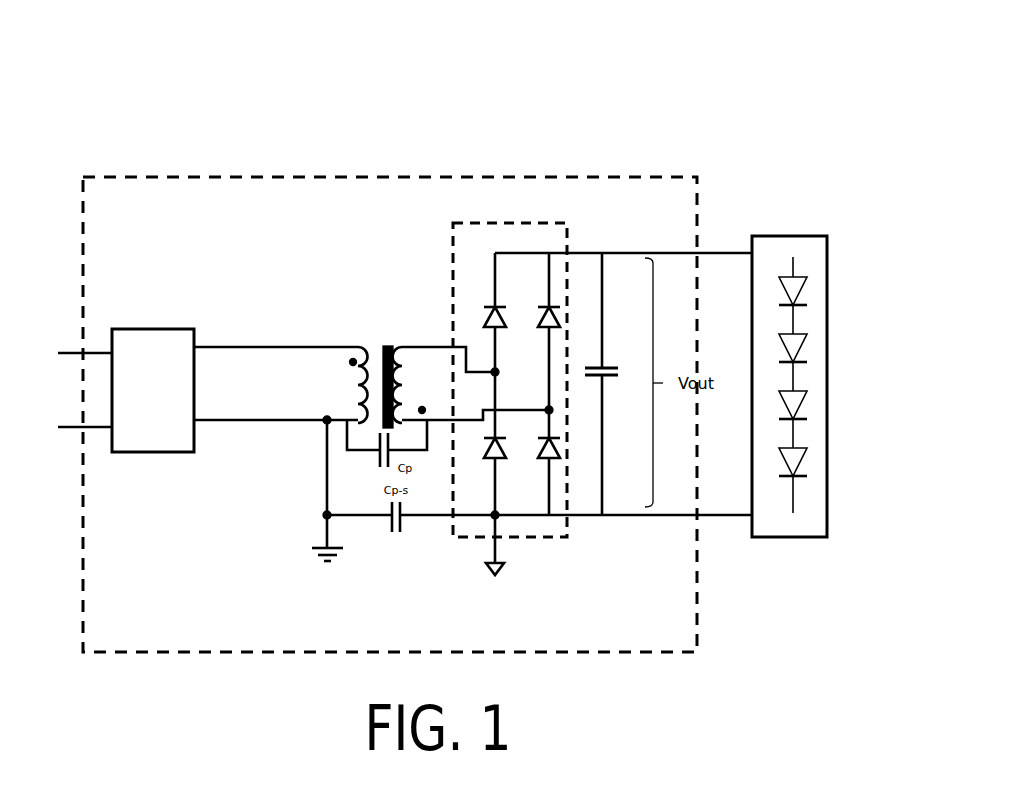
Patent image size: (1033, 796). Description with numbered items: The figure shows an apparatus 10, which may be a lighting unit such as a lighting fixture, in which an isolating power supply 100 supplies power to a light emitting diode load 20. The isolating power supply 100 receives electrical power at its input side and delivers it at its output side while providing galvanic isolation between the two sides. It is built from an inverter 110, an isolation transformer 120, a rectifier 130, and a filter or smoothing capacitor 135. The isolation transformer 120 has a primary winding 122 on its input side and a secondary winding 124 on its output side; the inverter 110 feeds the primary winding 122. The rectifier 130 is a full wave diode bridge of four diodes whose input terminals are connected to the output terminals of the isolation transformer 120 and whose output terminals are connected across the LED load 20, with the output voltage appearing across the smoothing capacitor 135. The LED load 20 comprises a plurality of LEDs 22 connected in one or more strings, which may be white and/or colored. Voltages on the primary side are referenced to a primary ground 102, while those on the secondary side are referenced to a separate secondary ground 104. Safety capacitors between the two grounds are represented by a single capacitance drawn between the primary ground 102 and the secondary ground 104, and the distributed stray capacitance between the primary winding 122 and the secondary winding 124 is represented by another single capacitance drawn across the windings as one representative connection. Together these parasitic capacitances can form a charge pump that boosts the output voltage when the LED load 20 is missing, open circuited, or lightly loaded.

The apparatus 10 is at (760, 36).
The LED load 20 is at (769, 420).
The LEDs 22 is at (779, 287).
The isolating power supply 100 is at (410, 177).
The primary ground 102 is at (306, 557).
The secondary ground 104 is at (475, 546).
The inverter 110 is at (150, 452).
The isolation transformer 120 is at (373, 346).
The primary winding 122 is at (357, 384).
The secondary winding 124 is at (415, 368).
The rectifier 130 is at (540, 537).
The smoothing capacitor 135 is at (614, 388).